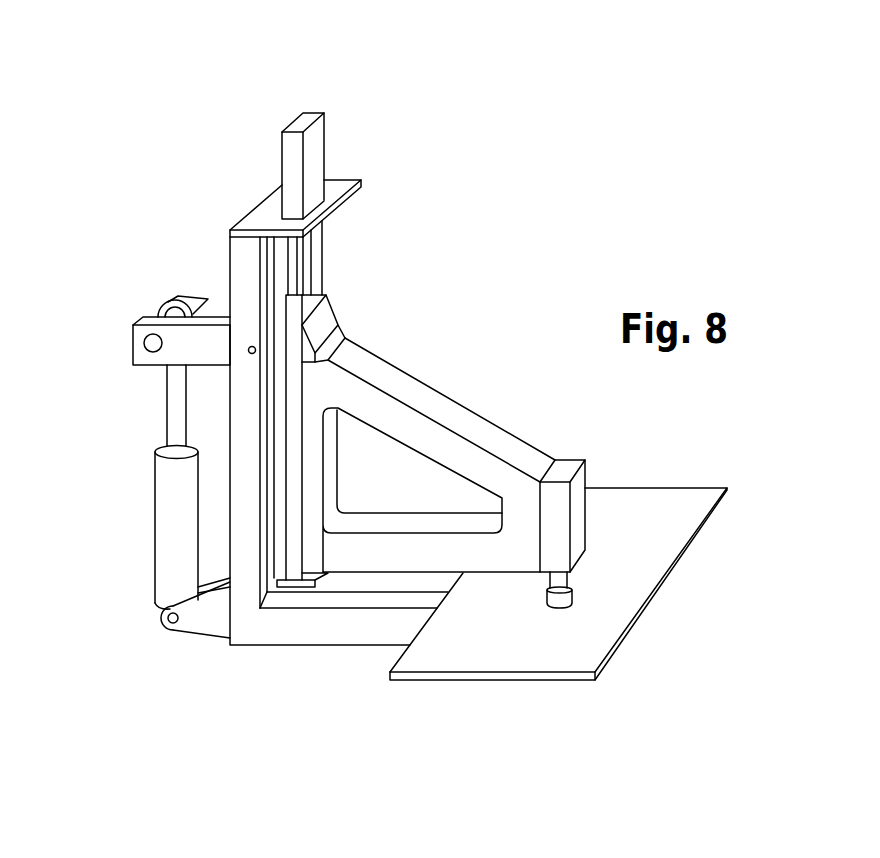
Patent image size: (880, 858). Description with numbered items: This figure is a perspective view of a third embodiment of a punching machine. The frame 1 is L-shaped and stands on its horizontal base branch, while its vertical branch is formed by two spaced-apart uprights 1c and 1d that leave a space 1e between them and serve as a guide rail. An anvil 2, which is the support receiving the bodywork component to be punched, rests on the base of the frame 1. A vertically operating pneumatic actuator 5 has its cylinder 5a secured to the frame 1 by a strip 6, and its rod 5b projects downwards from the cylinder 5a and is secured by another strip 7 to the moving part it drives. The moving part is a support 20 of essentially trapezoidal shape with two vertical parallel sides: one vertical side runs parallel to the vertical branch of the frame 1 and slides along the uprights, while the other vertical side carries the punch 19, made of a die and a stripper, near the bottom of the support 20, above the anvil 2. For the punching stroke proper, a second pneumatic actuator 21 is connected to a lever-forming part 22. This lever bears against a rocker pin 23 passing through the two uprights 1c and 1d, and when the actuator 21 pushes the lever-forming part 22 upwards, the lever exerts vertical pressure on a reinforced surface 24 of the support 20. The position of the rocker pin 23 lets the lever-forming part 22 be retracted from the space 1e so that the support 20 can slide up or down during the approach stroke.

The frame 1 is at (296, 451).
The upright 1c is at (317, 252).
The upright 1d is at (240, 257).
The space 1e is at (284, 275).
The anvil 2 is at (648, 567).
The pneumatic actuator 5 is at (443, 387).
The cylinder 5a is at (292, 157).
The rod 5b is at (295, 403).
The strip 6 is at (338, 182).
The strip 7 is at (302, 583).
The punch 19 is at (553, 607).
The support 20 is at (487, 438).
The pneumatic actuator 21 is at (170, 510).
The lever-forming part 22 is at (217, 308).
The rocker pin 23 is at (252, 357).
The reinforced surface 24 is at (343, 330).